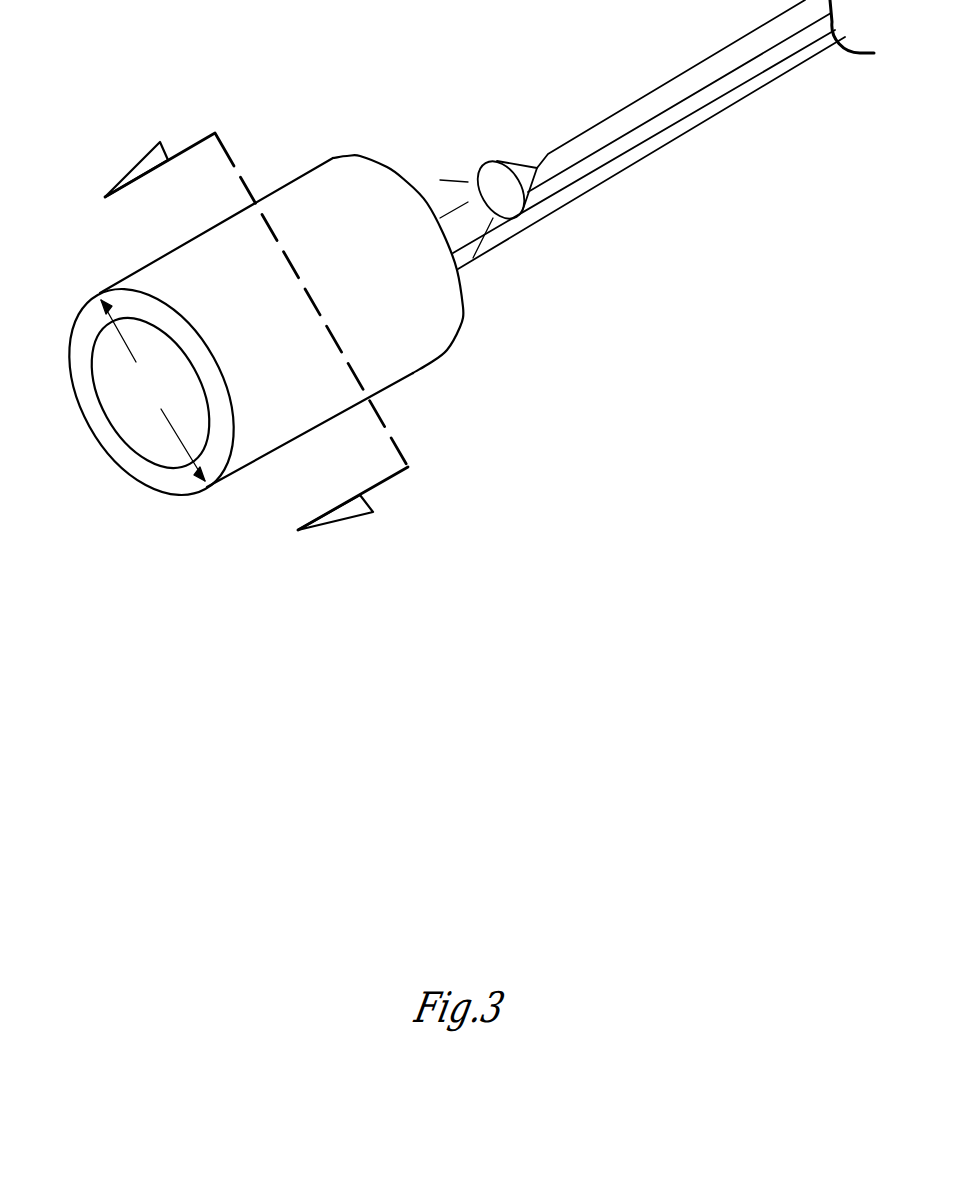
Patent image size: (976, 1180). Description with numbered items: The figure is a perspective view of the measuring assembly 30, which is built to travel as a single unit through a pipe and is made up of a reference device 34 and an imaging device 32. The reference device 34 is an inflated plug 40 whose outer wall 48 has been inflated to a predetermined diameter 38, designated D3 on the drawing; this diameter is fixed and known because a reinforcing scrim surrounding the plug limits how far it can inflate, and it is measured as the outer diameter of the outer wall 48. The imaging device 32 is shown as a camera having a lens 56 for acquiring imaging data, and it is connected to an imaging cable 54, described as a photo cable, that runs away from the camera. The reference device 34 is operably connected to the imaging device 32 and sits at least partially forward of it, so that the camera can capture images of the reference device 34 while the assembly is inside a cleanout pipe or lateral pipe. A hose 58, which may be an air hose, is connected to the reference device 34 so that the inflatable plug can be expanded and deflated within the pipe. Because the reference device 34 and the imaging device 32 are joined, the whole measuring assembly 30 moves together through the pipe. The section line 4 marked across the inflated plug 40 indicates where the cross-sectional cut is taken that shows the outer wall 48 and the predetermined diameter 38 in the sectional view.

The section line 4- 4 is at (98, 183).
The measuring assembly 30 is at (117, 268).
The imaging device 32 is at (515, 167).
The reference device 34 is at (405, 375).
The predetermined diameter 38 is at (141, 404).
The inflated plug 40 is at (242, 212).
The outer wall 48 is at (202, 273).
The imaging cable 54 is at (627, 105).
The lens 56 is at (485, 178).
The hose 58 is at (630, 165).
The predetermined diameter dimension D3 is at (153, 390).